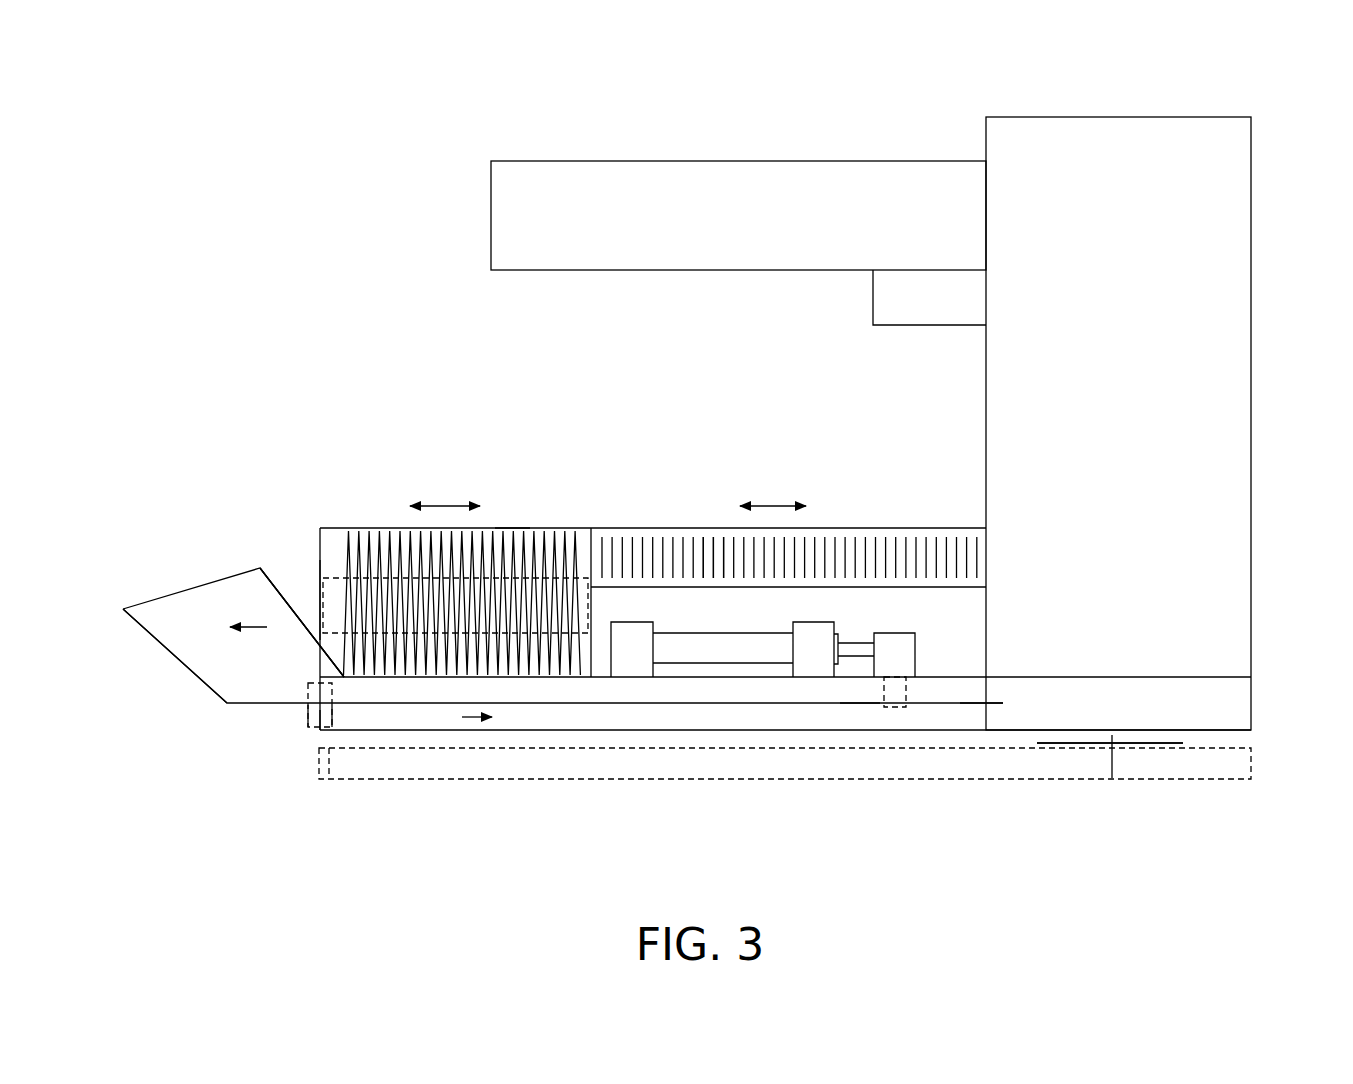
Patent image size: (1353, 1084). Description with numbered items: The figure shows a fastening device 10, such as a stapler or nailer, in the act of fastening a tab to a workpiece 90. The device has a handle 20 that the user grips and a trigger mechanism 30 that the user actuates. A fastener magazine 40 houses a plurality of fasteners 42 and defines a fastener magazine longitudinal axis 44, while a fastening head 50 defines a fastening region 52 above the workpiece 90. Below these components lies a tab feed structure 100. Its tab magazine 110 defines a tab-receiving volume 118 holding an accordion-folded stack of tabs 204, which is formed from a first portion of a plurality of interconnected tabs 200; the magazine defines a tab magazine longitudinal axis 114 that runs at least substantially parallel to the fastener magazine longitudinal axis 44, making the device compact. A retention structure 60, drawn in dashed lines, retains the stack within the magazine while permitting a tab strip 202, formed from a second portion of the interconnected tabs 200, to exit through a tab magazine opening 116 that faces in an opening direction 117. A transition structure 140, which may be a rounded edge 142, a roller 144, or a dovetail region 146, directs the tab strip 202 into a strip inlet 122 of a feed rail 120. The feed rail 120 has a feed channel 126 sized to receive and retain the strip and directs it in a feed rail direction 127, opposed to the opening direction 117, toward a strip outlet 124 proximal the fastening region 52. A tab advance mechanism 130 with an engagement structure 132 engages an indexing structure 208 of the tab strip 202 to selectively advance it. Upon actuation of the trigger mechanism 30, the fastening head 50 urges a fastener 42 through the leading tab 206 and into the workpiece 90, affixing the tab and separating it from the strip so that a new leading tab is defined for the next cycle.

The fastening device 10 is at (140, 156).
The handle 20 is at (627, 156).
The trigger mechanism 30 is at (885, 330).
The fastening head 50 is at (1155, 114).
The fastening region 52 is at (1259, 678).
The tab feed structure 100 is at (241, 482).
The tab-receiving volume 118 is at (328, 547).
The retention structure 60 is at (318, 592).
The tab magazine 110 is at (377, 526).
The tab magazine longitudinal axis 114 is at (443, 504).
The accordion-folded stack of tabs 204 is at (512, 505).
The plurality of interconnected tabs 200 is at (562, 530).
The fastener magazine 40 is at (642, 526).
The fasteners 42 is at (723, 543).
The fastener magazine longitudinal axis 44 is at (775, 502).
The tab strip 202 is at (177, 590).
The tab magazine opening 116 is at (291, 590).
The opening direction 117 is at (252, 627).
The transition structure 140 is at (303, 692).
The strip inlet 122 is at (301, 717).
The rounded edge 142 is at (310, 727).
The roller 144 is at (327, 727).
The dovetail region 146 is at (330, 710).
The feed rail direction 127 is at (482, 717).
The feed rail 120 is at (657, 733).
The feed channel 126 is at (738, 712).
The indexing structure 208 is at (863, 703).
The workpiece 90 is at (855, 778).
The leading tab 206 is at (980, 705).
The strip outlet 124 is at (1022, 736).
The tab advance mechanism 130 is at (679, 621).
The engagement structure 132 is at (907, 693).